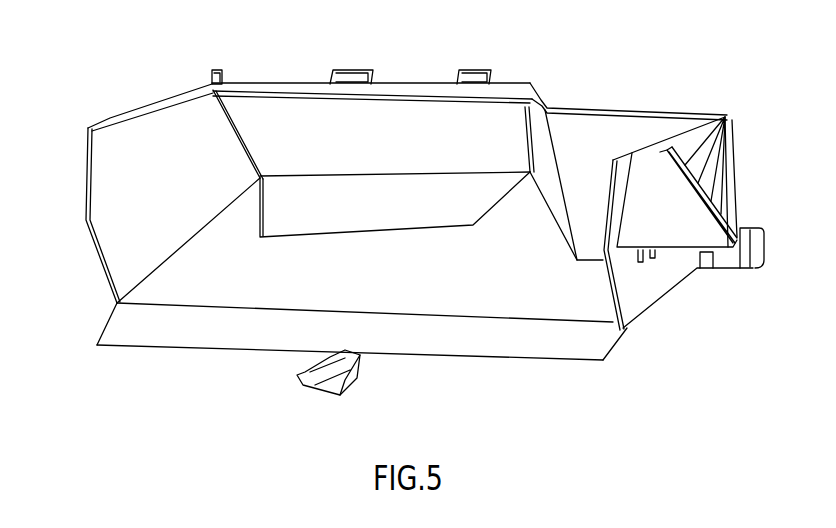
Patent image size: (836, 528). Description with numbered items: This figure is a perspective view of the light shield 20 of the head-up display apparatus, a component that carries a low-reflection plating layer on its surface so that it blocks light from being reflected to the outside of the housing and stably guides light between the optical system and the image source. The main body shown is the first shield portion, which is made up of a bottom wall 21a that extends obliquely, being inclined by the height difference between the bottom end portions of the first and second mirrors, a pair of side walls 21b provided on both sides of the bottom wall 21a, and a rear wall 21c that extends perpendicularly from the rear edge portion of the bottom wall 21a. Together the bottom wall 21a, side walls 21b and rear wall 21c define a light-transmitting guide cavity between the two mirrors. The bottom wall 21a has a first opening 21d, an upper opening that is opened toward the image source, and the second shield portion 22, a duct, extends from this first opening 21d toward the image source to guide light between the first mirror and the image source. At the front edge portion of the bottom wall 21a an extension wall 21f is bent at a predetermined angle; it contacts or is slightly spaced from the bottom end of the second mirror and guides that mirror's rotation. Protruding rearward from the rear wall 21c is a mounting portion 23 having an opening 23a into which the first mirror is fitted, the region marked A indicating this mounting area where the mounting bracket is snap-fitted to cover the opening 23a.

The light shield 20 is at (119, 45).
The bottom wall 21a is at (260, 300).
The side walls 21b is at (110, 228).
The rear wall 21c is at (650, 133).
The first opening 21d is at (410, 195).
The extension wall 21f is at (302, 335).
The second shield portion 22 is at (450, 148).
The mounting portion 23 is at (539, 83).
The opening 23a is at (312, 115).
The region A is at (568, 85).